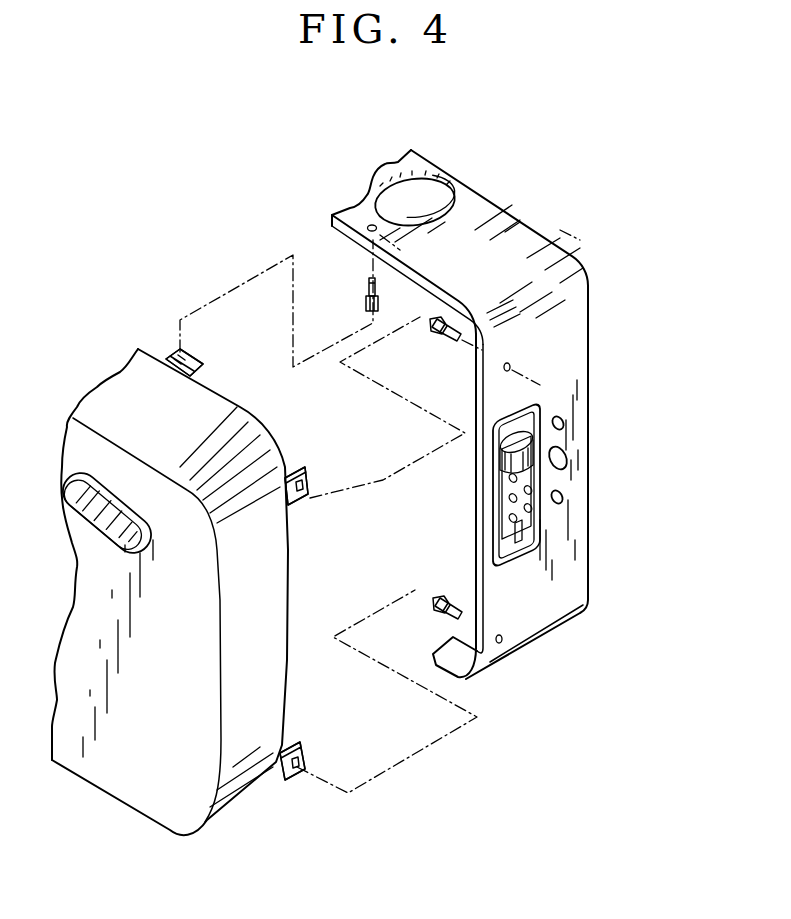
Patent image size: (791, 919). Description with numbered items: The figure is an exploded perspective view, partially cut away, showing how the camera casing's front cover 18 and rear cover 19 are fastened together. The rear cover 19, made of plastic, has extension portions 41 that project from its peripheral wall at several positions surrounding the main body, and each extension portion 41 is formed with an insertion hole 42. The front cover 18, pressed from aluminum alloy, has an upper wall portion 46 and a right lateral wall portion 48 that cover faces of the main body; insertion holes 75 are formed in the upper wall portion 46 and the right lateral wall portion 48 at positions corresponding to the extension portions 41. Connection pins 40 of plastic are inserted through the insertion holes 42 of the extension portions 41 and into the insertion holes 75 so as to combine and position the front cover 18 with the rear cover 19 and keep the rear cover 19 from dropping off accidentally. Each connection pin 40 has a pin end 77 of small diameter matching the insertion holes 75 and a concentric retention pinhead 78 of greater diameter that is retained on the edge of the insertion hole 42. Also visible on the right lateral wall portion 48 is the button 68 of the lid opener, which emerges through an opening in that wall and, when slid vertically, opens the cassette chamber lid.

The front cover 18 is at (498, 421).
The rear cover 19 is at (232, 812).
The connection pin 40 is at (425, 457).
The extension portion 41 is at (207, 374).
The insertion hole 42 is at (177, 360).
The upper wall portion 46 is at (478, 207).
The right lateral wall portion 48 is at (573, 535).
The button 68 is at (505, 490).
The insertion hole 75 is at (368, 226).
The pin end 77 is at (366, 286).
The retention pinhead 78 is at (365, 305).